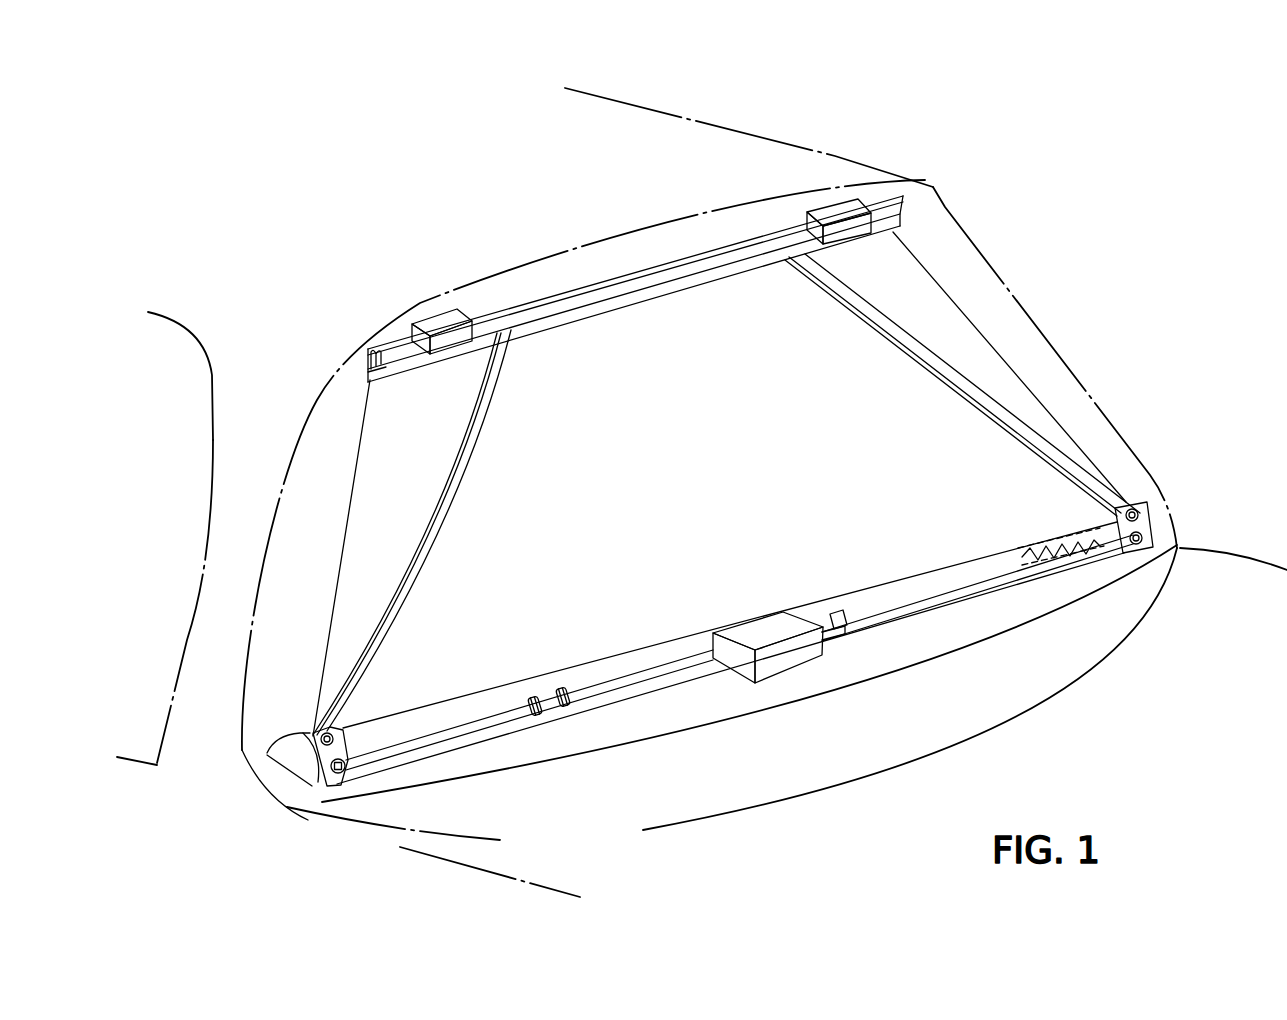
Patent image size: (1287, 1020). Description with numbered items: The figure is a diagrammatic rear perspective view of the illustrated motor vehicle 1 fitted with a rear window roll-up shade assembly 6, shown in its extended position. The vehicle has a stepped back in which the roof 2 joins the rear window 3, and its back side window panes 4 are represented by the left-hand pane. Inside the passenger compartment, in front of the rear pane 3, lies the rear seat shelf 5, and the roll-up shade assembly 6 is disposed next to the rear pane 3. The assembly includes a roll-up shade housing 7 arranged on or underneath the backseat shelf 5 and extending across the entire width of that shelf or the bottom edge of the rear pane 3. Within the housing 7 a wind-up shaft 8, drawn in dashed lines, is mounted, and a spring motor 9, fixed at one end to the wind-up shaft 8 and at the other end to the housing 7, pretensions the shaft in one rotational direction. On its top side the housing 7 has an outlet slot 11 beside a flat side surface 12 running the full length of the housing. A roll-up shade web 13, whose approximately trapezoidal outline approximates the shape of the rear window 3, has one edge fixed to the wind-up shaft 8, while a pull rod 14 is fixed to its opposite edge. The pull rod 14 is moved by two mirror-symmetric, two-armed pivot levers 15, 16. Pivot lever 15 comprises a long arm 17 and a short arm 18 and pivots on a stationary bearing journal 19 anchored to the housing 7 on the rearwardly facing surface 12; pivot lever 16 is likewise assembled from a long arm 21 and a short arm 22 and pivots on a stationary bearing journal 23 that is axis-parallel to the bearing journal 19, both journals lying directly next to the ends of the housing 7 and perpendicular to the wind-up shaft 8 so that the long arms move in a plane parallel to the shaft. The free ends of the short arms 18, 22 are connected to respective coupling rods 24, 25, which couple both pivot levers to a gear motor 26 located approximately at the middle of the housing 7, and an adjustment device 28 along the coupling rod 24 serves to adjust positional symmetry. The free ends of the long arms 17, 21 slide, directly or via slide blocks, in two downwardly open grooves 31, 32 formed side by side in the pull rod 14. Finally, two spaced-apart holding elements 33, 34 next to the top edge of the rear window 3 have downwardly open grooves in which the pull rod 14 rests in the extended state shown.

The window assembly 1 is at (1015, 189).
The roof 2 is at (743, 127).
The rear window 3 is at (1020, 297).
The back side window panes 4 is at (134, 510).
The rear seat shelf 5 is at (863, 746).
The roll-up shade assembly 6 is at (1067, 395).
The roll-up shade housing 7 is at (266, 753).
The wind-up shaft 8 is at (1022, 552).
The spring motor 9 is at (1080, 547).
The outlet slot 11 is at (310, 737).
The flat side surface 12 is at (313, 812).
The roll-up shade web 13 is at (643, 486).
The pull rod 14 is at (650, 294).
The pivot lever 15 is at (432, 517).
The pivot lever 16 is at (885, 333).
The long arm 17 is at (457, 455).
The short arm 18 is at (350, 729).
The stationary bearing journal 19 is at (346, 722).
The long arm 21 is at (913, 355).
The short arm 22 is at (1146, 528).
The stationary bearing journal 23 is at (1136, 512).
The coupling rod 24 is at (427, 720).
The coupling rod 25 is at (990, 585).
The gear motor 26 is at (757, 630).
The adjustment device 28 is at (548, 697).
The groove 31 is at (370, 349).
The groove 32 is at (381, 352).
The holding element 33 is at (447, 318).
The holding element 34 is at (845, 208).